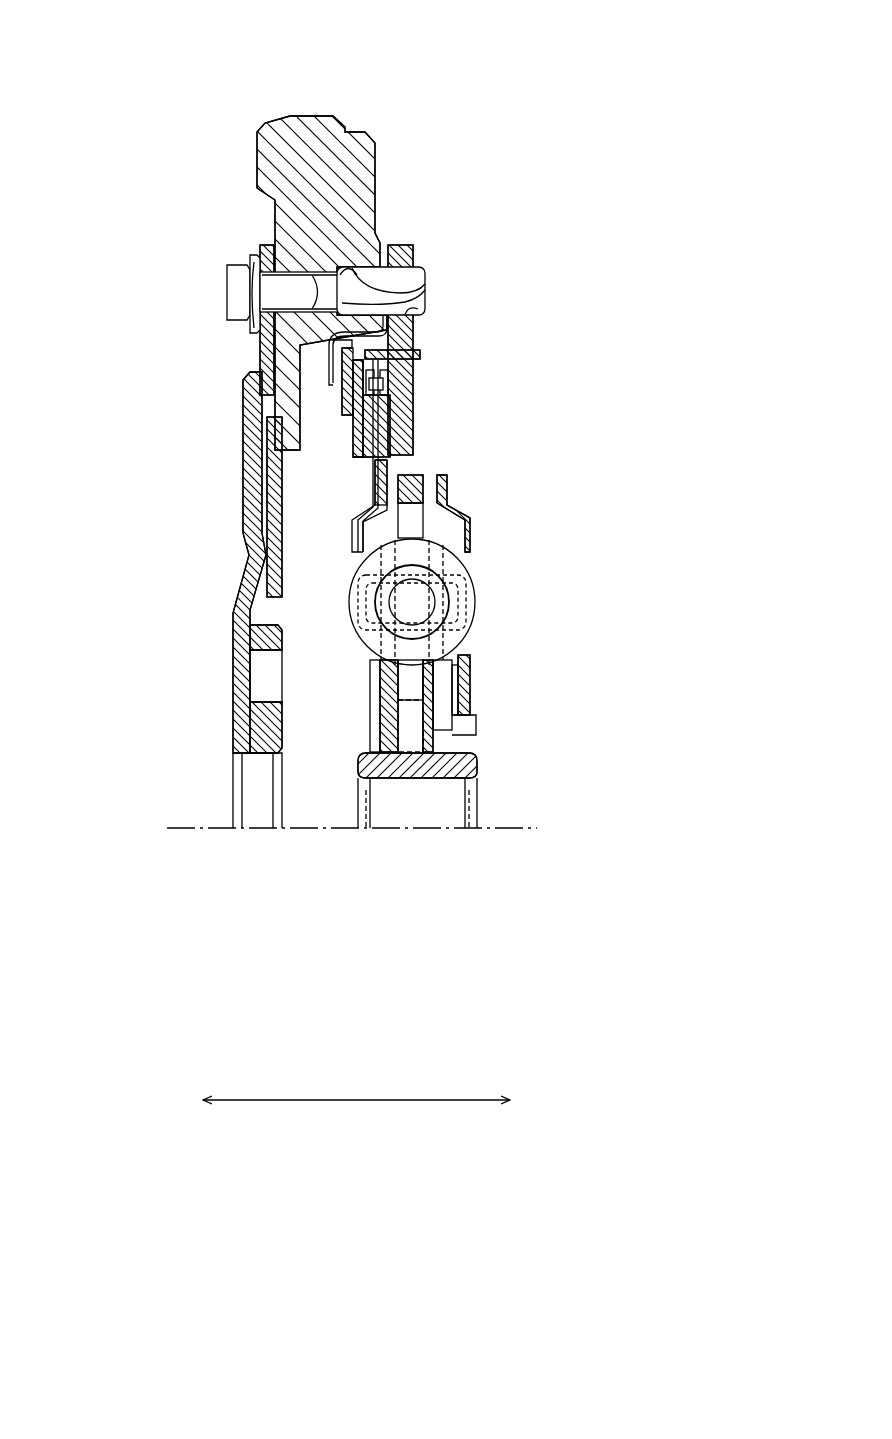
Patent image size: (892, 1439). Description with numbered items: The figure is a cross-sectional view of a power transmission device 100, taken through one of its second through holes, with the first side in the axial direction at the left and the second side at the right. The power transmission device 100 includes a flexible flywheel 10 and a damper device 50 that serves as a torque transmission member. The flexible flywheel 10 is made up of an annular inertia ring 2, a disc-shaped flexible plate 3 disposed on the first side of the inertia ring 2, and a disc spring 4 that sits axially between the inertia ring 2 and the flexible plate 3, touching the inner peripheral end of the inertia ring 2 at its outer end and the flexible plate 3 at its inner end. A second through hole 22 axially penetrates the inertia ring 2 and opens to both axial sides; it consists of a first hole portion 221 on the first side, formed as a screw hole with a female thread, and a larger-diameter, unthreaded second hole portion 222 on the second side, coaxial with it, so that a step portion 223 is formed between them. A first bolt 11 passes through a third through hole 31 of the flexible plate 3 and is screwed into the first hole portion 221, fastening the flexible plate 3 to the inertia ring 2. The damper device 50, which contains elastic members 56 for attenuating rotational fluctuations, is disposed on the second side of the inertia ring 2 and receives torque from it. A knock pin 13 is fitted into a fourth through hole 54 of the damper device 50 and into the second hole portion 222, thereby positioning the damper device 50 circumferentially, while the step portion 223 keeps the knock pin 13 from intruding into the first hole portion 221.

The power transmission device 100 is at (482, 80).
The flexible flywheel 10 is at (268, 110).
The inertia ring 2 is at (333, 110).
The flexible plate 3 is at (248, 433).
The disc spring 4 is at (275, 495).
The first bolt 11 is at (237, 290).
The knock pin 13 is at (423, 298).
The second through hole 22 is at (593, 182).
The first hole portion 221 is at (427, 291).
The second hole portion 222 is at (427, 282).
The step portion 223 is at (357, 262).
The third through hole 31 is at (265, 277).
The damper device 50 is at (490, 500).
The fourth through hole 54 is at (423, 308).
The elastic member 56 is at (473, 593).